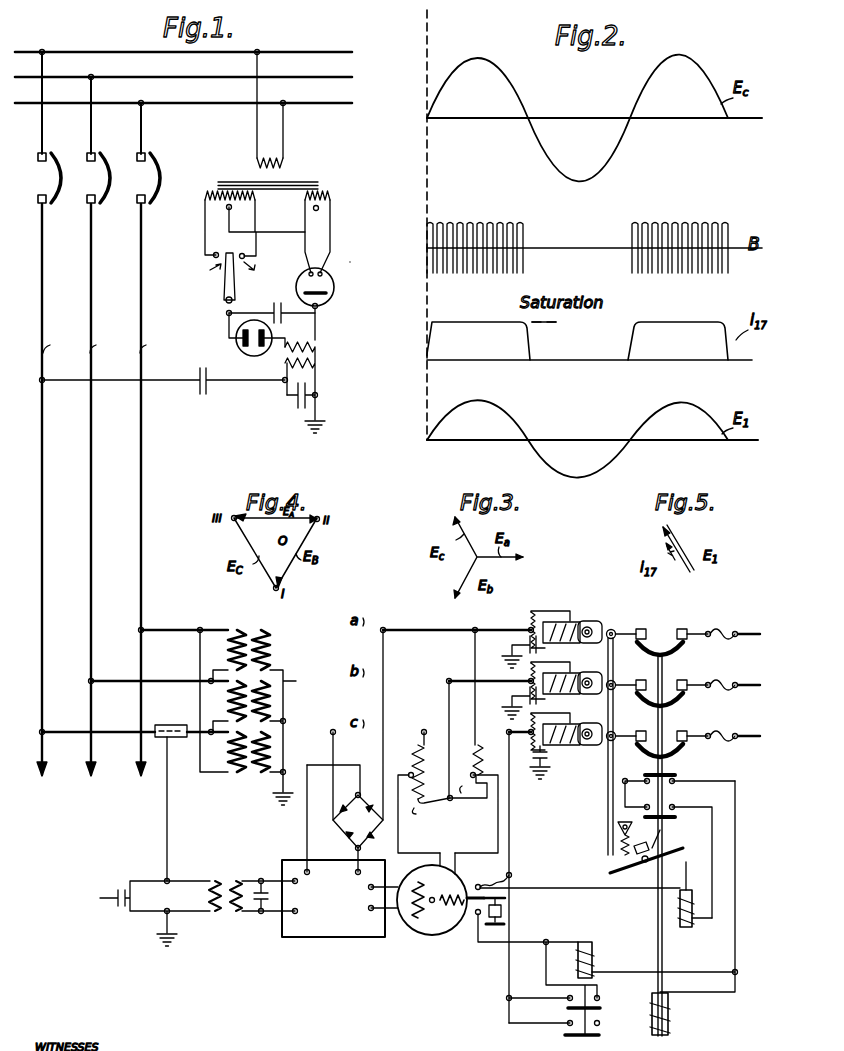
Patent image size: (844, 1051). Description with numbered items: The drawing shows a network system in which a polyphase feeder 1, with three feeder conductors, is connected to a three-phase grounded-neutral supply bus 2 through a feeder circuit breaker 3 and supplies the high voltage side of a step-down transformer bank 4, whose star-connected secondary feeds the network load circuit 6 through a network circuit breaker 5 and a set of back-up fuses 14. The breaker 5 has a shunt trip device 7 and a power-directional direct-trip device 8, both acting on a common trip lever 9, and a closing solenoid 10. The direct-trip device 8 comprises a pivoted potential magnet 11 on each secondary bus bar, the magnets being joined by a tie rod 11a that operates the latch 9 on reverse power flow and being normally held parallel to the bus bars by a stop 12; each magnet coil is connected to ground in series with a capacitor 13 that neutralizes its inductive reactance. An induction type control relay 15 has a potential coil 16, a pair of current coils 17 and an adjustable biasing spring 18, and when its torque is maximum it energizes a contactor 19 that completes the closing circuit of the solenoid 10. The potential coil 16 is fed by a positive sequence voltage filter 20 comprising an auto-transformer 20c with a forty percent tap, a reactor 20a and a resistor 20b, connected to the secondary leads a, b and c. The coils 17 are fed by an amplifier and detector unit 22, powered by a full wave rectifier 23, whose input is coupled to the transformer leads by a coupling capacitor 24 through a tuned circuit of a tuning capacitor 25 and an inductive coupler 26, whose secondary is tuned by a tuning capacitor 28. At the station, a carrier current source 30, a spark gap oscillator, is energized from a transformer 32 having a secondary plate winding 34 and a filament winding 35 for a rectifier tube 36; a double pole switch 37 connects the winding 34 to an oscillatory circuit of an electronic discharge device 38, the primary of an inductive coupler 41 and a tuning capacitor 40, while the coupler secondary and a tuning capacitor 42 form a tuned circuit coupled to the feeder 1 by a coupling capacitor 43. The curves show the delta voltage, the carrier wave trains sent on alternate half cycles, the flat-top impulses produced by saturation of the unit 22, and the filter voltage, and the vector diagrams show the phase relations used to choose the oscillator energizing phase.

The polyphase feeder 1 is at (42, 308).
The supply bus 2 is at (114, 103).
The feeder circuit breaker 3 is at (179, 173).
The step-down transformer bank 4 is at (251, 621).
The network circuit breaker 5 is at (666, 623).
The network load circuit 6 is at (768, 623).
The shunt trip device 7 is at (695, 907).
The power-directional direct-trip device 8 is at (591, 614).
The common trip lever 9 is at (646, 855).
The closing solenoid 10 is at (668, 1013).
The potential magnet 11 is at (546, 607).
The tie rod 11a is at (613, 669).
The stop 12 is at (615, 629).
The capacitor 13 is at (512, 646).
The back-up fuses 14 is at (733, 623).
The induction type control relay 15 is at (468, 954).
The potential coil 16 is at (484, 878).
The current coils 17 is at (440, 894).
The adjustable biasing spring 18 is at (506, 905).
The contactor 19 is at (594, 957).
The positive sequence voltage filter 20 is at (410, 754).
The reactor 20a is at (468, 703).
The resistor 20b is at (467, 739).
The auto-transformer 20c is at (427, 814).
The amplifier and detector unit 22 is at (297, 858).
The full wave rectifier 23 is at (332, 843).
The coupling capacitor 24 is at (185, 740).
The tuning capacitor 25 is at (141, 913).
The inductive coupler 26 is at (239, 876).
The tuning capacitor 28 is at (255, 913).
The carrier current source 30 is at (368, 256).
The transformer 32 is at (236, 178).
The secondary plate winding 34 is at (248, 213).
The secondary filament voltage winding 35 is at (332, 207).
The rectifier tube 36 is at (335, 291).
The double pole switch 37 is at (224, 289).
The electronic discharge device 38 is at (242, 340).
The tuning capacitor 40 is at (276, 304).
The inductive coupler 41 is at (317, 356).
The tuning capacitor 42 is at (297, 408).
The coupling capacitor 43 is at (200, 396).